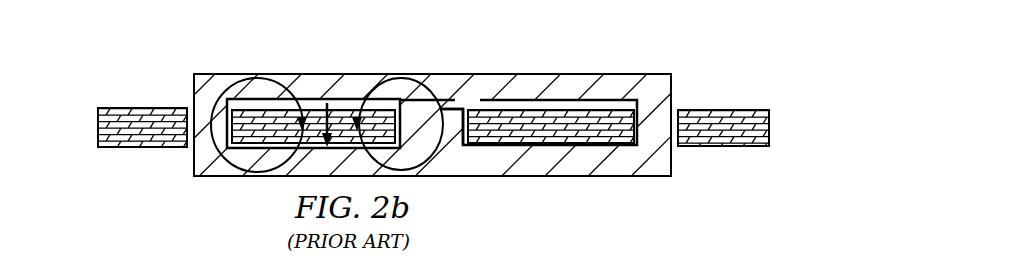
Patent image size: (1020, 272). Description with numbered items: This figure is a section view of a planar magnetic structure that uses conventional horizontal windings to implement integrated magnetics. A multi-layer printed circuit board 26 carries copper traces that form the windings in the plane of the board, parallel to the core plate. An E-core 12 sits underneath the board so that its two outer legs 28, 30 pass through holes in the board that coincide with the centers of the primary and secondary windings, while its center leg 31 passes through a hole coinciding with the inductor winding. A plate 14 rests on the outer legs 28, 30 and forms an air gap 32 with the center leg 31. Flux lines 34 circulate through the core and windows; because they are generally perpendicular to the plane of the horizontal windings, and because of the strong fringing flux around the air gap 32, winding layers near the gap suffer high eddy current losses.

The E-core 12 is at (570, 170).
The plate 14 is at (226, 71).
The multi-layer printed circuit board 26 is at (721, 98).
The outer leg 28 is at (200, 160).
The outer leg 30 is at (663, 162).
The center leg 31 is at (453, 147).
The air gap 32 is at (463, 99).
The flux lines 34 is at (280, 82).